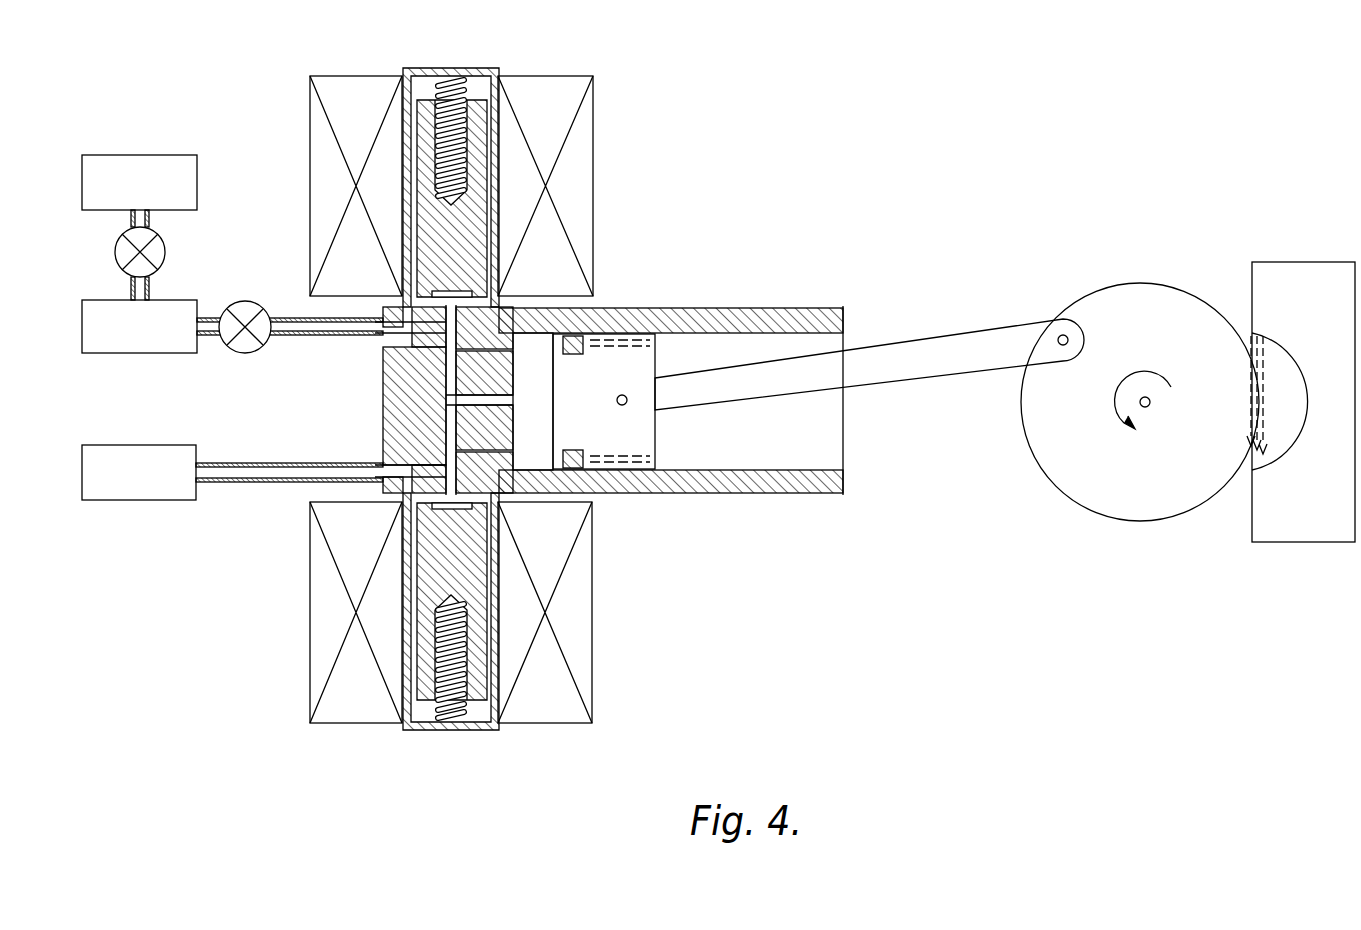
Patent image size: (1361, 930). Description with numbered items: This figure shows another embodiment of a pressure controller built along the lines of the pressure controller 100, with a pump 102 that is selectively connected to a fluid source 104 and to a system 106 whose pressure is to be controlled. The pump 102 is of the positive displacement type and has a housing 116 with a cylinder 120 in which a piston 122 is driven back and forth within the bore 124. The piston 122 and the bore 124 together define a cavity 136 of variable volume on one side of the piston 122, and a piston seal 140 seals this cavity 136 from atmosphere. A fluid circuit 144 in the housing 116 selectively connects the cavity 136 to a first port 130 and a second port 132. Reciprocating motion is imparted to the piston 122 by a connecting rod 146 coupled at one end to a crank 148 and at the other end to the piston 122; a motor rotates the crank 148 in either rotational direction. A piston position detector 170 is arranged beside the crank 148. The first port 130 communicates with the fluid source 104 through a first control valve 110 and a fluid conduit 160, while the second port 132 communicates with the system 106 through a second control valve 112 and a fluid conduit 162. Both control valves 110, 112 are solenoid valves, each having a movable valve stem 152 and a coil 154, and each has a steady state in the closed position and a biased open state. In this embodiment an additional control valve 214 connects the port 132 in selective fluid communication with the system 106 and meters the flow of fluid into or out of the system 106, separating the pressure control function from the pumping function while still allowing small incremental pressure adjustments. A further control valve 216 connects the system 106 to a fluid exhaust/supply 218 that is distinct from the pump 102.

The pressure controller 100 is at (160, 115).
The pump 102 is at (791, 379).
The fluid source 104 is at (140, 500).
The system 106 is at (105, 300).
The first control valve 110 is at (374, 640).
The second control valve 112 is at (488, 67).
The housing 116 is at (412, 400).
The cylinder 120 is at (708, 431).
The piston 122 is at (632, 364).
The bore 124 is at (843, 456).
The first port 130 is at (371, 466).
The second port 132 is at (372, 334).
The cavity 136 is at (540, 466).
The piston seal 140 is at (575, 335).
The fluid circuit 144 is at (421, 425).
The connecting rod 146 is at (905, 341).
The crank 148 is at (1140, 283).
The valve stem 152 is at (417, 555).
The coil 154 is at (594, 123).
The fluid conduit 160 is at (260, 483).
The fluid conduit 162 is at (301, 336).
The piston position detector 170 is at (1300, 262).
The control valve 214 is at (252, 300).
The control valve 216 is at (190, 242).
The fluid exhaust/supply 218 is at (198, 177).